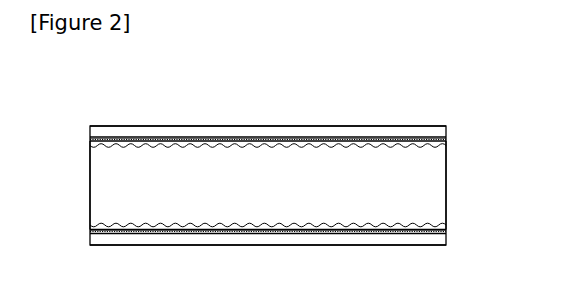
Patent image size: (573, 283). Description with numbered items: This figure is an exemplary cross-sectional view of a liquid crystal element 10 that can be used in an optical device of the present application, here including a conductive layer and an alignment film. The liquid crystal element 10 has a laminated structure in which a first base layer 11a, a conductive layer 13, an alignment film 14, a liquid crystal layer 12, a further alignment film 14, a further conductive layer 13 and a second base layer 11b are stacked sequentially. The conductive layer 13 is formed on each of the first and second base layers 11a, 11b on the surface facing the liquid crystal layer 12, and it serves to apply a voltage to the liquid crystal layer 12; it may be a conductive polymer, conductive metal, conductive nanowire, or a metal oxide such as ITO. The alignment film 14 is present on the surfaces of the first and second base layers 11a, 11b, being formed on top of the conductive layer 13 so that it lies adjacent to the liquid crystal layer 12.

The liquid crystal element 10 is at (107, 85).
The first base layer 11a is at (446, 128).
The second base layer 11b is at (446, 236).
The liquid crystal layer 12 is at (446, 178).
The conductive layer 13 is at (90, 138).
The alignment film 14 is at (446, 144).